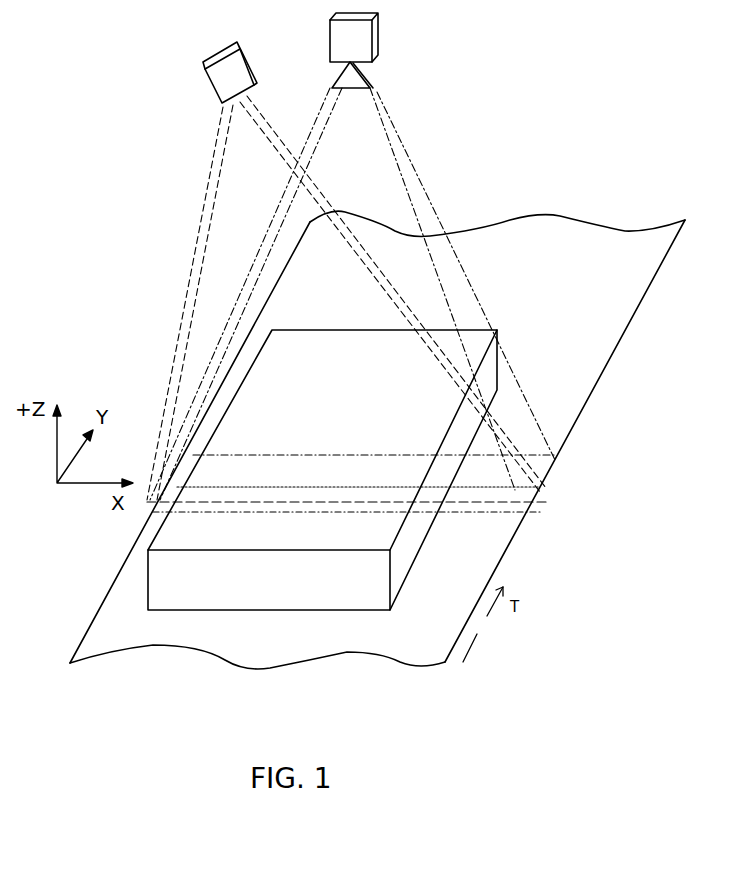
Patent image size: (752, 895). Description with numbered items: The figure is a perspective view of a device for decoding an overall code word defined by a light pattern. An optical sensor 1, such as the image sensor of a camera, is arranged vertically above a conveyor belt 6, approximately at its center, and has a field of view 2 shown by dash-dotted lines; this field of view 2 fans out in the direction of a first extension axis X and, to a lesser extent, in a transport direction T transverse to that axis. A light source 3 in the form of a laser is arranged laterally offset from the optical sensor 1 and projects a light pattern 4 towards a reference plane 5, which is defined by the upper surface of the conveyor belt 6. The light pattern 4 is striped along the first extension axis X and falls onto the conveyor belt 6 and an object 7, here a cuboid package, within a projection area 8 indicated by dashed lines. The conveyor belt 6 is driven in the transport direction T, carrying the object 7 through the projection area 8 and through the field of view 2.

The optical sensor 1 is at (360, 38).
The field of view 2 is at (423, 178).
The light source 3 is at (223, 80).
The light pattern 4 is at (545, 492).
The reference plane 5 is at (613, 258).
The conveyor belt 6 is at (635, 312).
The object 7 is at (303, 592).
The projection area 8 is at (210, 190).